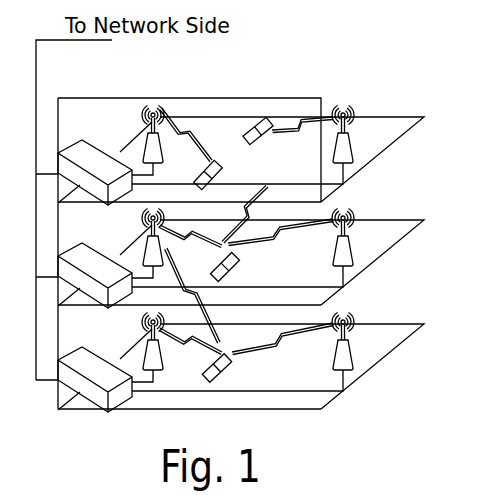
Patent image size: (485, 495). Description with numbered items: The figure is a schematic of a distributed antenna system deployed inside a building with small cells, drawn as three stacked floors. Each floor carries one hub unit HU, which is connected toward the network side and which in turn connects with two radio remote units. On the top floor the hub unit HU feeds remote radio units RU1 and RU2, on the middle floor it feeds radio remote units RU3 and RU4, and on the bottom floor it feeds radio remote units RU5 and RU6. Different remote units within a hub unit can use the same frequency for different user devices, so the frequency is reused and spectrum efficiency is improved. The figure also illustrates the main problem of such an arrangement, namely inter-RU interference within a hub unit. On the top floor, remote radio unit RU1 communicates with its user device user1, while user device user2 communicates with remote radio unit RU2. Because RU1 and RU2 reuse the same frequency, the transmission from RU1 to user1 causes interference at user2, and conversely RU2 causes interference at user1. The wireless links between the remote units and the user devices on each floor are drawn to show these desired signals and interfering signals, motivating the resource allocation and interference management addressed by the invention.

The hub unit HU is at (95, 261).
The remote radio unit RU1 is at (150, 119).
The remote radio unit RU2 is at (366, 125).
The radio remote unit RU3 is at (175, 232).
The radio remote unit RU4 is at (366, 228).
The radio remote unit RU5 is at (164, 330).
The radio remote unit RU6 is at (366, 331).
The user device user1 is at (236, 174).
The user device user2 is at (280, 136).